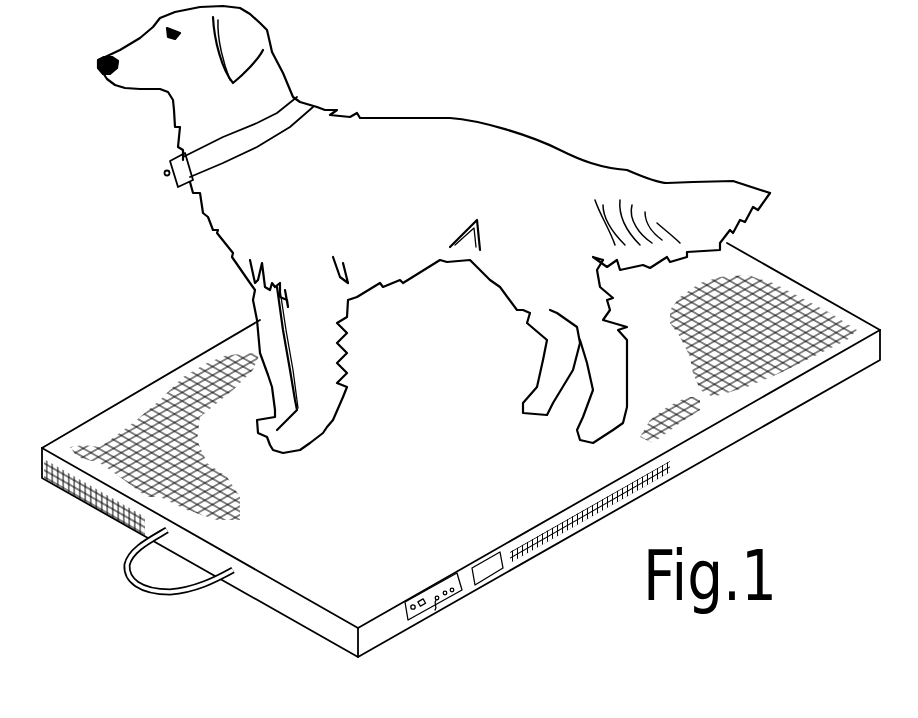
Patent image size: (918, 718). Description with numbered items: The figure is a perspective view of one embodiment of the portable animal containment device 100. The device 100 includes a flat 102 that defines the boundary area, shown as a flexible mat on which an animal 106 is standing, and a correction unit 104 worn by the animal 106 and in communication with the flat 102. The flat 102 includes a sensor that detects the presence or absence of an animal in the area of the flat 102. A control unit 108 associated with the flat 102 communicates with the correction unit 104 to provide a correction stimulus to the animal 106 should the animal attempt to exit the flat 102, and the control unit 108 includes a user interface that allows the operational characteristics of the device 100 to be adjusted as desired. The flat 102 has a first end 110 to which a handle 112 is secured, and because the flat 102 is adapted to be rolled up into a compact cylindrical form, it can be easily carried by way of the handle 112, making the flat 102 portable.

The portable animal containment device 100 is at (718, 147).
The flat 102 is at (100, 433).
The correction unit 104 is at (167, 173).
The animal 106 is at (463, 127).
The control unit 108 is at (417, 617).
The first end 110 is at (100, 493).
The handle 112 is at (140, 590).